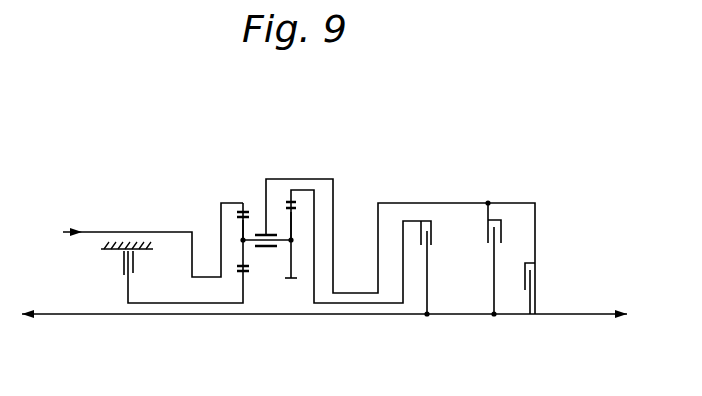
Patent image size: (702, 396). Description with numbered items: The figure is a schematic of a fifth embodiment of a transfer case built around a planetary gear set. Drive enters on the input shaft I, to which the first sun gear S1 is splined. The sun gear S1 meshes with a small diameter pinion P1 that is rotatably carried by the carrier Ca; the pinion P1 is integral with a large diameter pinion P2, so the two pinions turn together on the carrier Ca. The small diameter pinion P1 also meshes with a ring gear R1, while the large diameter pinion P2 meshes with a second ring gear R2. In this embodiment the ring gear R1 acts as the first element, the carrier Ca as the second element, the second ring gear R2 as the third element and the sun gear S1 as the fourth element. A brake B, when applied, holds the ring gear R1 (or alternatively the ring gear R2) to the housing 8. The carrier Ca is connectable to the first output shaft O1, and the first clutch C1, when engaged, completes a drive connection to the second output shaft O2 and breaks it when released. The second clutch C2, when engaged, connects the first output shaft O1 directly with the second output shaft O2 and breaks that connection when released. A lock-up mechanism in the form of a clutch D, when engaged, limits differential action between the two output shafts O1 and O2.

The housing 8 is at (120, 241).
The input shaft I is at (152, 238).
The brake B is at (116, 270).
The first sun gear S1 is at (243, 283).
The ring gear R1 is at (238, 202).
The small diameter pinion P1 is at (245, 221).
The carrier Ca is at (262, 200).
The second ring gear R2 is at (301, 190).
The large diameter pinion P2 is at (292, 222).
The first clutch C1 is at (440, 228).
The second clutch C2 is at (507, 226).
The lock-up clutch D is at (543, 276).
The first output shaft O1 is at (592, 313).
The second output shaft O2 is at (55, 314).